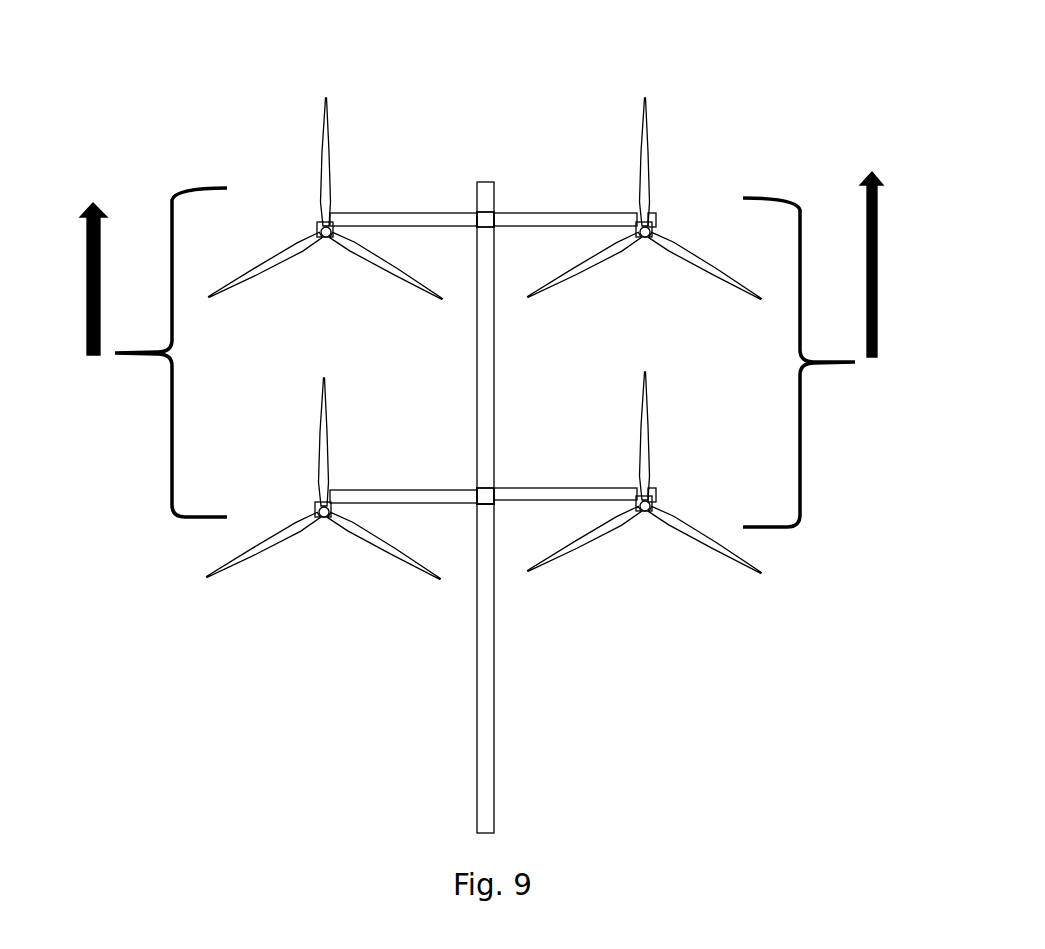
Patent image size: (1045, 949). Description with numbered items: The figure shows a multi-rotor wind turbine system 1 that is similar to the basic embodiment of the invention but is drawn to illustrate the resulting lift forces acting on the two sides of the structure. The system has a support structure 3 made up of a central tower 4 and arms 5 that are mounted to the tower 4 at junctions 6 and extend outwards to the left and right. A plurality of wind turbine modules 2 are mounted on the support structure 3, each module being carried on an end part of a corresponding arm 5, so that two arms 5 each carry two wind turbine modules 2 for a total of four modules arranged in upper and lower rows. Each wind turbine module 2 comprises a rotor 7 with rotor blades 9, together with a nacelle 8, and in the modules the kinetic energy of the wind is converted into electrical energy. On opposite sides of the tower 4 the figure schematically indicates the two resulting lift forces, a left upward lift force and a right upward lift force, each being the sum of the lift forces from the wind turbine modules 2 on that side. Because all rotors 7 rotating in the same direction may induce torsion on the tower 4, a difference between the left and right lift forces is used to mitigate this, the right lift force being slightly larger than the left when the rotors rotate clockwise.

The wind turbine system 1 is at (206, 66).
The wind turbine module 2 is at (484, 357).
The support structure 3 is at (515, 403).
The tower 4 is at (477, 670).
The arm 5 is at (540, 212).
The junction 6 is at (478, 212).
The rotor 7 is at (670, 219).
The nacelle 8 is at (653, 503).
The rotor blade 9 is at (652, 177).